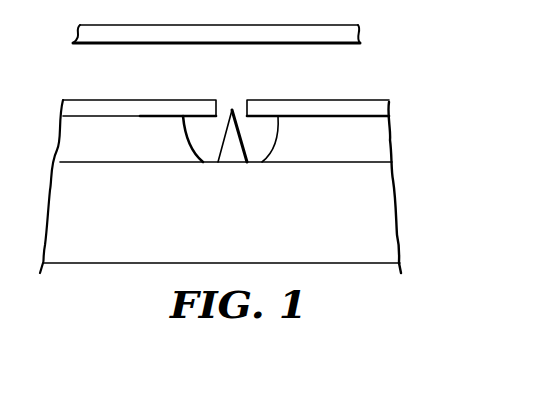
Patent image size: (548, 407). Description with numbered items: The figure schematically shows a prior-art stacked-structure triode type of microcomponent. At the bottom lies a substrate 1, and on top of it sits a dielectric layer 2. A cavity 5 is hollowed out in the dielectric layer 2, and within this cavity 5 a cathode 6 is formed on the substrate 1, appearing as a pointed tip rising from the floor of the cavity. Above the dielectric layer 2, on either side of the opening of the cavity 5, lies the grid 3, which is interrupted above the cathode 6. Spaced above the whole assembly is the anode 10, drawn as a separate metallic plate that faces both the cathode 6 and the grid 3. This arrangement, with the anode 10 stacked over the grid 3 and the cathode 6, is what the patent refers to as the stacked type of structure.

The substrate 1 is at (385, 223).
The dielectric layer 2 is at (382, 152).
The grid 3 is at (383, 112).
The cavity 5 is at (258, 145).
The cathode 6 is at (235, 128).
The anode 10 is at (358, 32).